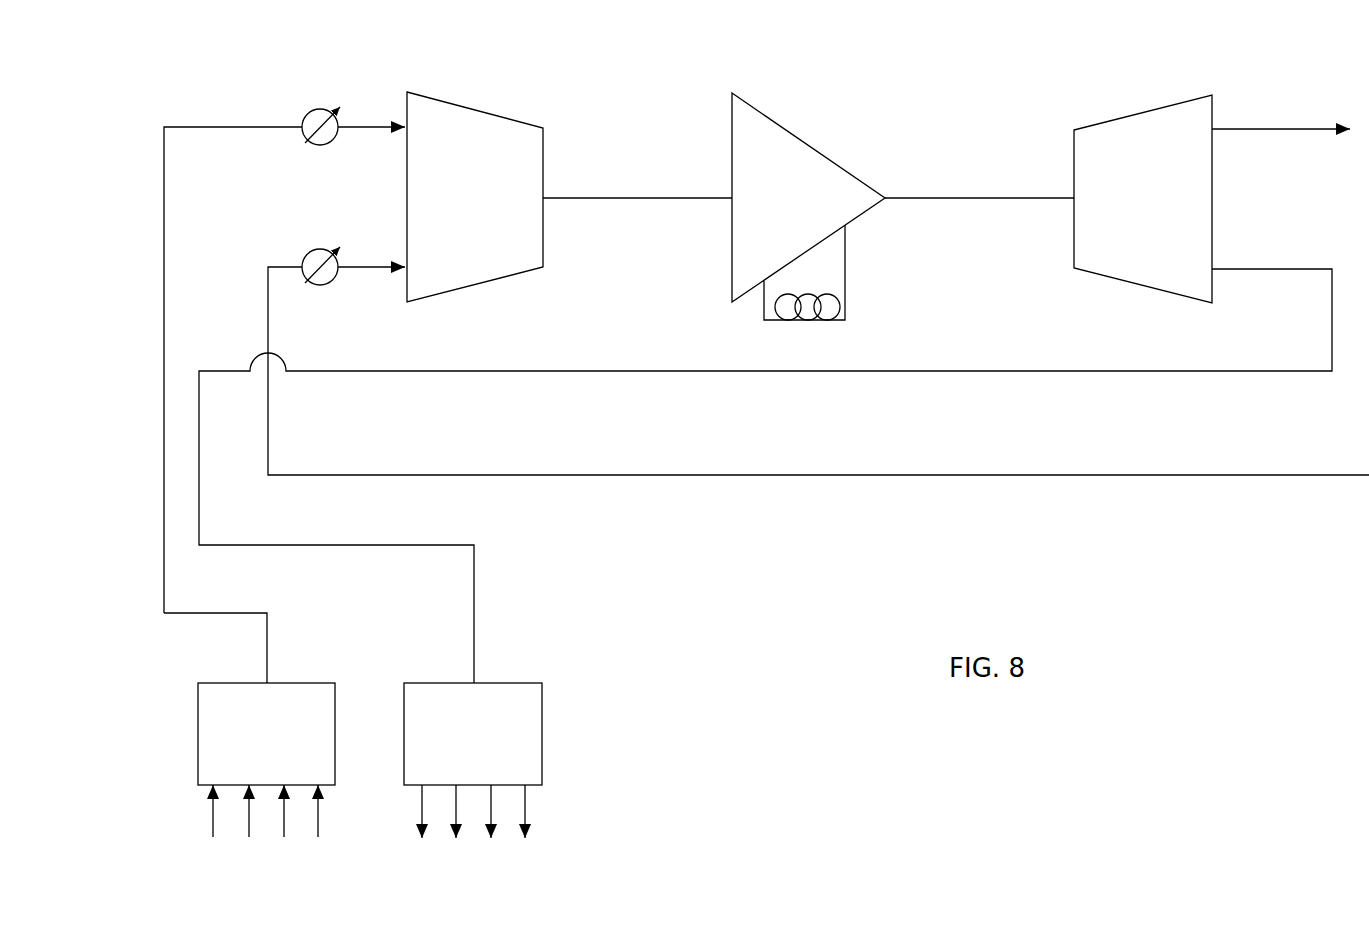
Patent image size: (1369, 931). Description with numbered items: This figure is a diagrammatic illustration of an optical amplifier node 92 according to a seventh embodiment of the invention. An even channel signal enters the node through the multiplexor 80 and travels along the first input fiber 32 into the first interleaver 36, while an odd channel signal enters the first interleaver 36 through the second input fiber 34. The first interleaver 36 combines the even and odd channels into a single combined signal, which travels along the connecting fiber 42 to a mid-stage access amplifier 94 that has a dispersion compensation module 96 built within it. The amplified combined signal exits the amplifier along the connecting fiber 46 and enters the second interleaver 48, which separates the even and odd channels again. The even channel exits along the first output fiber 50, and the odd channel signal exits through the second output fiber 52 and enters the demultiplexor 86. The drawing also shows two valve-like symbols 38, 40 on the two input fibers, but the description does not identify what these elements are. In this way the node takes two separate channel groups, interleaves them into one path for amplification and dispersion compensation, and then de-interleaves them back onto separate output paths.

The first input fiber 32 is at (373, 127).
The second input fiber 34 is at (285, 267).
The first interleaver 36 is at (459, 211).
The first control valve 38 is at (322, 108).
The second control valve 40 is at (323, 248).
The connecting fiber 42 is at (697, 198).
The connecting fiber 46 is at (1007, 198).
The second interleaver 48 is at (1130, 215).
The first output fiber 50 is at (1265, 129).
The second output fiber 52 is at (1273, 269).
The multiplexor 80 is at (254, 748).
The demultiplexor 86 is at (457, 748).
The optical amplifier node 92 is at (718, 592).
The mid-stage access amplifier 94 is at (770, 213).
The dispersion compensation module 96 is at (807, 322).